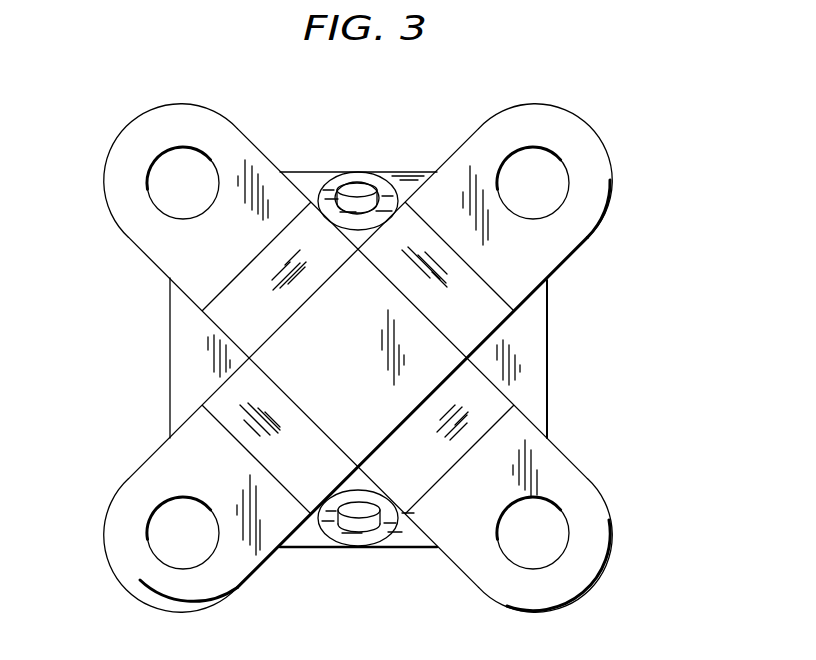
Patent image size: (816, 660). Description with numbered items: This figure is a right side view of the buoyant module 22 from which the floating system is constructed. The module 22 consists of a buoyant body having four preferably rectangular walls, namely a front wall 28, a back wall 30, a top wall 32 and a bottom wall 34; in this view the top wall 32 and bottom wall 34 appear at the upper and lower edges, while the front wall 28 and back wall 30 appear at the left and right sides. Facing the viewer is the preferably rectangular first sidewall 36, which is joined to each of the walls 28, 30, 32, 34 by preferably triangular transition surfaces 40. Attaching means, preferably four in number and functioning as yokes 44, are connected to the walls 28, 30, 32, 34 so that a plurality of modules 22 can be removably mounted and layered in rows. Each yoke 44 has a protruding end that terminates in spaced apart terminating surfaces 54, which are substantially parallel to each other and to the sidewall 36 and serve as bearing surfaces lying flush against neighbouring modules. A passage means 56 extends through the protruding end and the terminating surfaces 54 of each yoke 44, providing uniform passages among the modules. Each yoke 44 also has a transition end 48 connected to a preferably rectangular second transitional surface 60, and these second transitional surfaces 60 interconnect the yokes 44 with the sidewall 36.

The module 22 is at (104, 92).
The front wall 28 is at (170, 393).
The back wall 30 is at (548, 320).
The top wall 32 is at (301, 172).
The bottom wall 34 is at (406, 548).
The first sidewall 36 is at (338, 397).
The transition surfaces 40 is at (190, 351).
The yoke 44 is at (612, 205).
The transition end 48 is at (190, 270).
The terminating surfaces 54 is at (213, 246).
The passage means 56 is at (153, 173).
The second transitional surfaces 60 is at (239, 335).